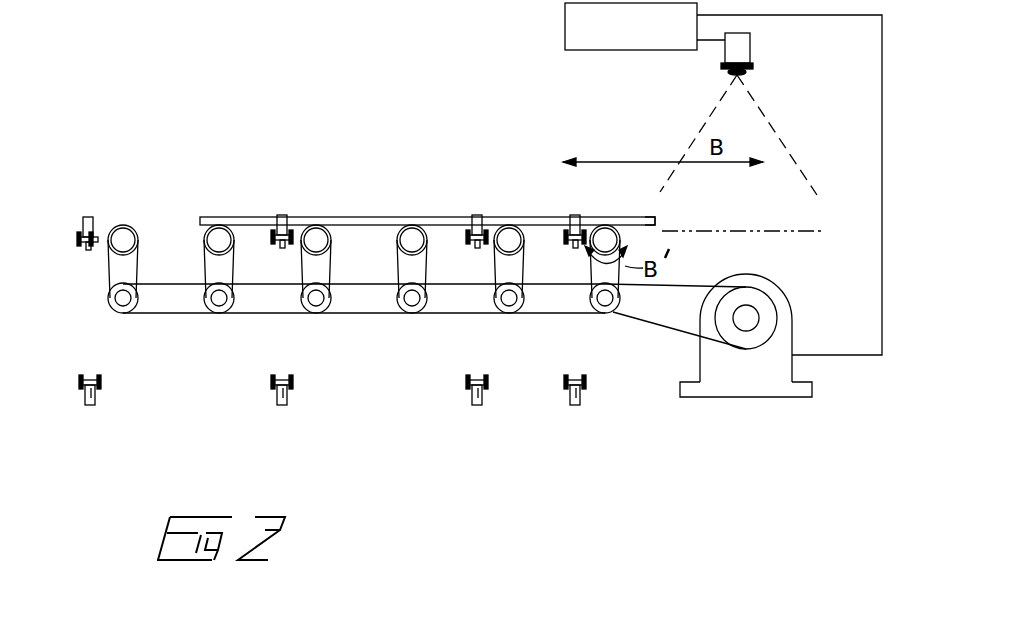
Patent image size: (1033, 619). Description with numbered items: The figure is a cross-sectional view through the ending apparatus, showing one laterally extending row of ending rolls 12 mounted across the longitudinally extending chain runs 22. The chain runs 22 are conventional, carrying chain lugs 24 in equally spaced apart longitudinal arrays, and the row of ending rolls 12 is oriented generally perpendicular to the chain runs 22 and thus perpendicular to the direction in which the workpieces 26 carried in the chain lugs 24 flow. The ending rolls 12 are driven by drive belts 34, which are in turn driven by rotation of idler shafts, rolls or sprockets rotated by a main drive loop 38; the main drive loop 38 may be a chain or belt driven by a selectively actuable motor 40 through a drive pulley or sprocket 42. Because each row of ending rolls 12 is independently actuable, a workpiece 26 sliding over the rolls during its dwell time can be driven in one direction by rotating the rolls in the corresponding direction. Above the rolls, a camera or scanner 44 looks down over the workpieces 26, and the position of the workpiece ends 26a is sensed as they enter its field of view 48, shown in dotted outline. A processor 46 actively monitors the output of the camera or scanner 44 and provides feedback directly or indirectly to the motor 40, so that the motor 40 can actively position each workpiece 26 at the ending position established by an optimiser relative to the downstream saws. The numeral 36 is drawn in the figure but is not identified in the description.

The ending rolls 12 is at (129, 227).
The chain runs 22 is at (88, 245).
The chain lugs 24 is at (90, 217).
The workpieces 26 is at (372, 217).
The workpiece ends 26a is at (655, 222).
The drive belts 34 is at (108, 270).
The lower roller 36 is at (121, 313).
The main drive loop 38 is at (683, 287).
The motor 40 is at (773, 293).
The drive pulley or sprocket 42 is at (772, 318).
The camera or scanner 44 is at (742, 52).
The processor 46 is at (723, 179).
The field of view 48 is at (773, 232).